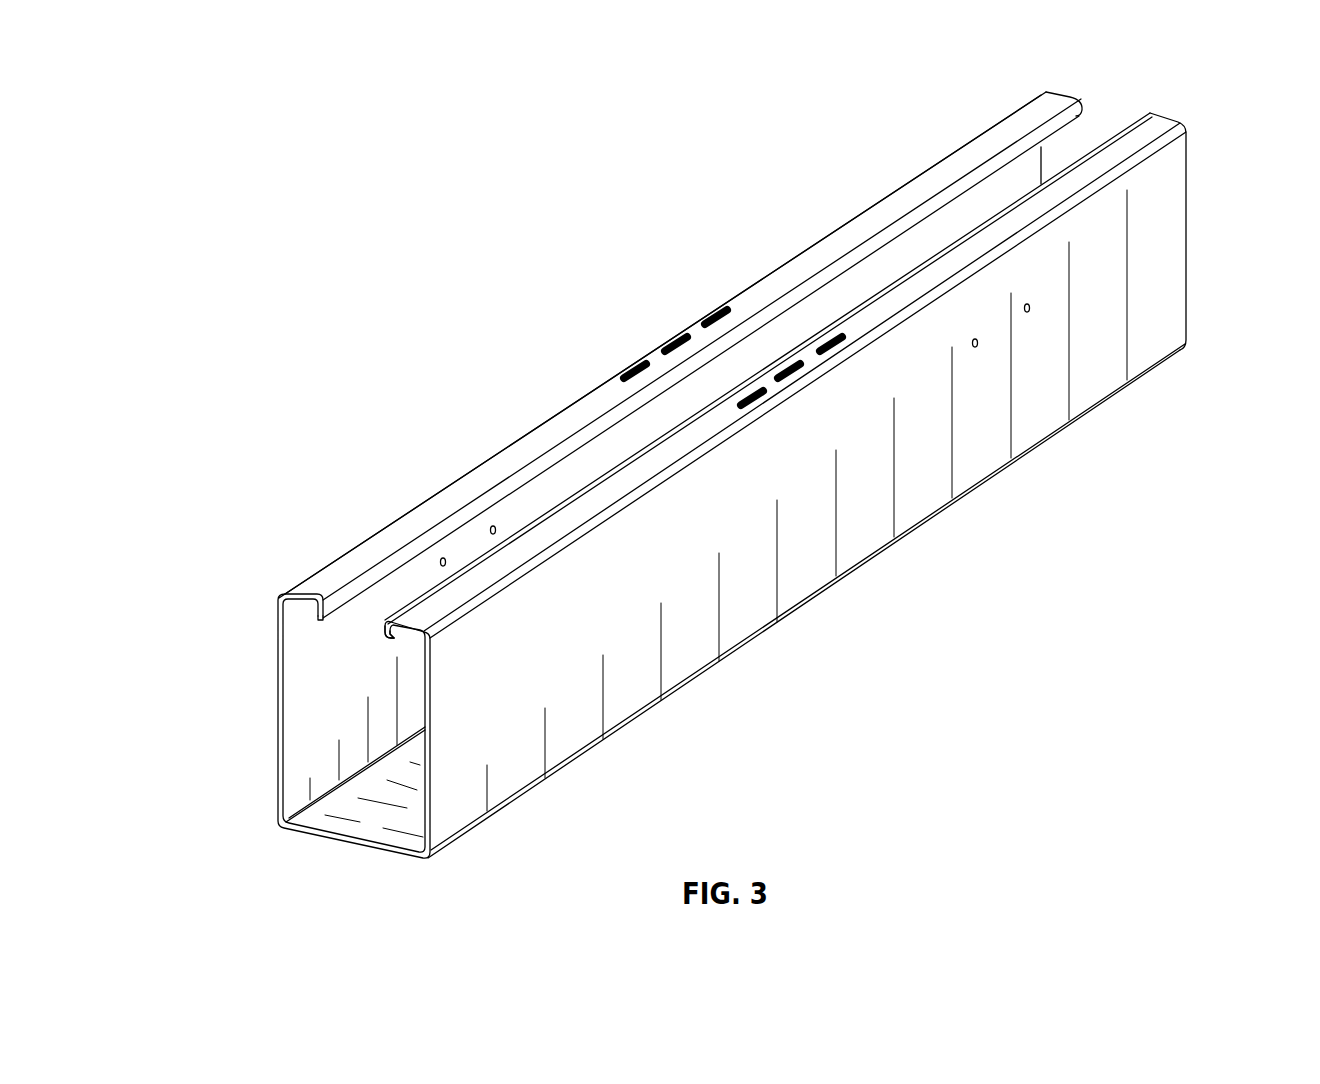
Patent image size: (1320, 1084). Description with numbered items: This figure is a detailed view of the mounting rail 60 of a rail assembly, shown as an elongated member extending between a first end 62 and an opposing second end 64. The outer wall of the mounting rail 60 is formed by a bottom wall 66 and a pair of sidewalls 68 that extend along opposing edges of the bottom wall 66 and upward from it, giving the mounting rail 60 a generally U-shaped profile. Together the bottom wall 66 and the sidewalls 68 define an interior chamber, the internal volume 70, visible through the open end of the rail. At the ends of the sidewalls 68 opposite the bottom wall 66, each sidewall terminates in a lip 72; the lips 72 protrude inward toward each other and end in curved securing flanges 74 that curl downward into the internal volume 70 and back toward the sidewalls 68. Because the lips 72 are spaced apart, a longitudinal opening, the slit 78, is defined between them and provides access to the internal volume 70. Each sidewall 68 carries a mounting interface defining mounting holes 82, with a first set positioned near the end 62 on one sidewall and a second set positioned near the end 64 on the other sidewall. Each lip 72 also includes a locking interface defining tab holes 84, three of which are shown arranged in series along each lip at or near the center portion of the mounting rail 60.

The mounting rail 60 is at (345, 349).
The end 62 is at (188, 684).
The end 64 is at (1220, 188).
The bottom wall 66 is at (382, 834).
The sidewalls 68 is at (302, 697).
The internal volume 70 is at (380, 715).
The lip 72 is at (322, 586).
The securing flanges 74 is at (386, 634).
The slit 78 is at (952, 224).
The mounting holes 82 is at (444, 557).
The tab holes 84 is at (668, 331).